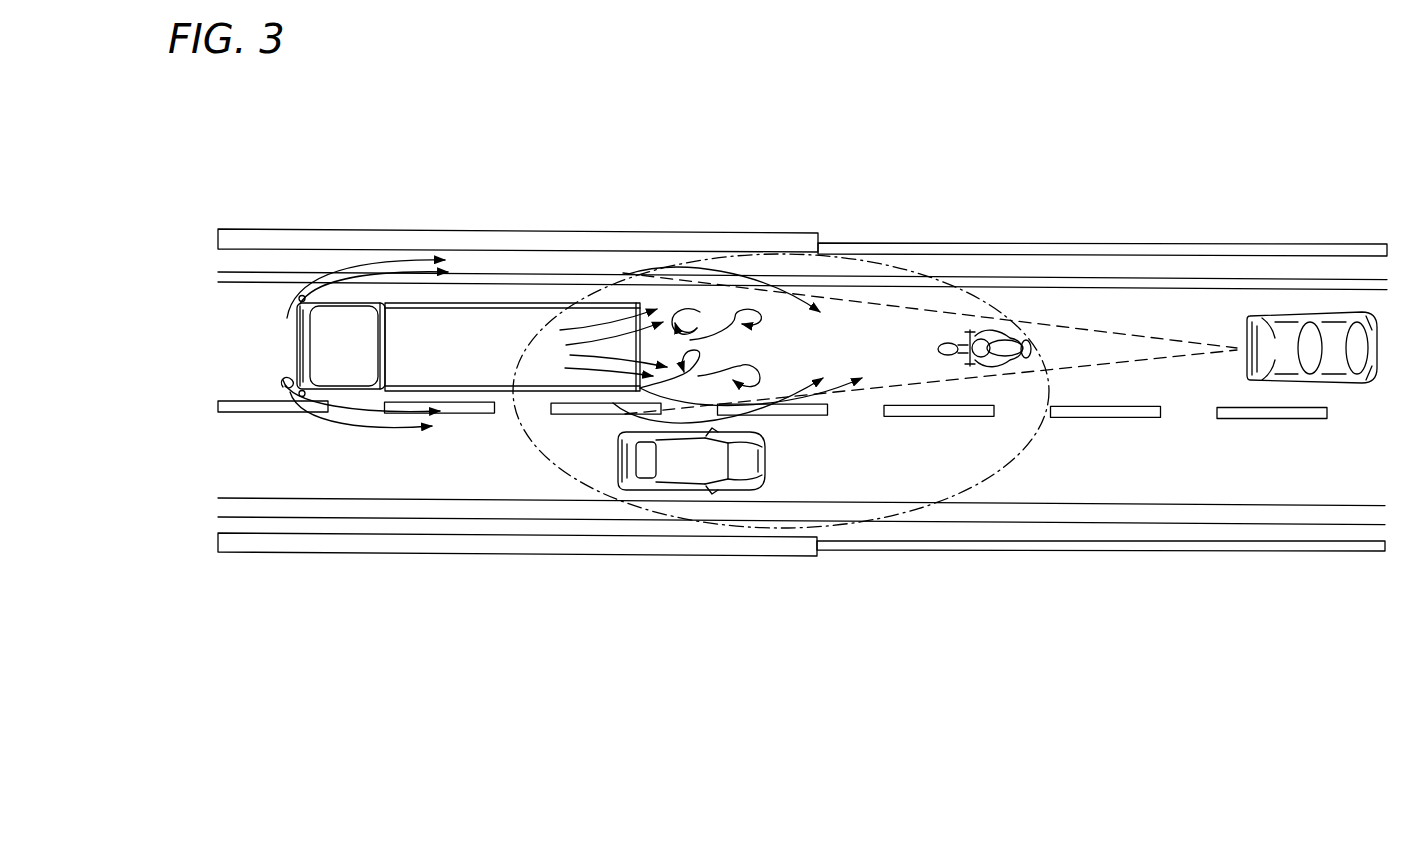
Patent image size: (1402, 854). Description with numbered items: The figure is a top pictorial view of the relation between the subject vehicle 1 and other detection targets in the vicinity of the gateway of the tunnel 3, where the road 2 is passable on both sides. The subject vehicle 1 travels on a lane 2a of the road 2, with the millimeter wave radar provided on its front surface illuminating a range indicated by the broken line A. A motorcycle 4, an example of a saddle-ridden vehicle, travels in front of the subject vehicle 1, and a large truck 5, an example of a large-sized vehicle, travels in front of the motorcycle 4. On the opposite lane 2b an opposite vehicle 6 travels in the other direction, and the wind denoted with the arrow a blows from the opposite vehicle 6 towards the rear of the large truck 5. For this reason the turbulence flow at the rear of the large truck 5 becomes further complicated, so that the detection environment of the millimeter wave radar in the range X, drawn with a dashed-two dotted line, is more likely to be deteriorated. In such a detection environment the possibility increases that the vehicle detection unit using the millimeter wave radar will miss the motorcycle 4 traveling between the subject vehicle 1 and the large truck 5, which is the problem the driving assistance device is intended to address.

The subject vehicle 1 is at (1253, 320).
The road 2 is at (1145, 243).
The lane 2a is at (236, 362).
The opposite lane 2b is at (235, 468).
The tunnel 3 is at (732, 232).
The motorcycle 4 is at (1012, 338).
The large truck 5 is at (297, 333).
The opposite vehicle 6 is at (615, 465).
The arrow a is at (767, 420).
The broken line A is at (1127, 361).
The range X is at (1047, 450).